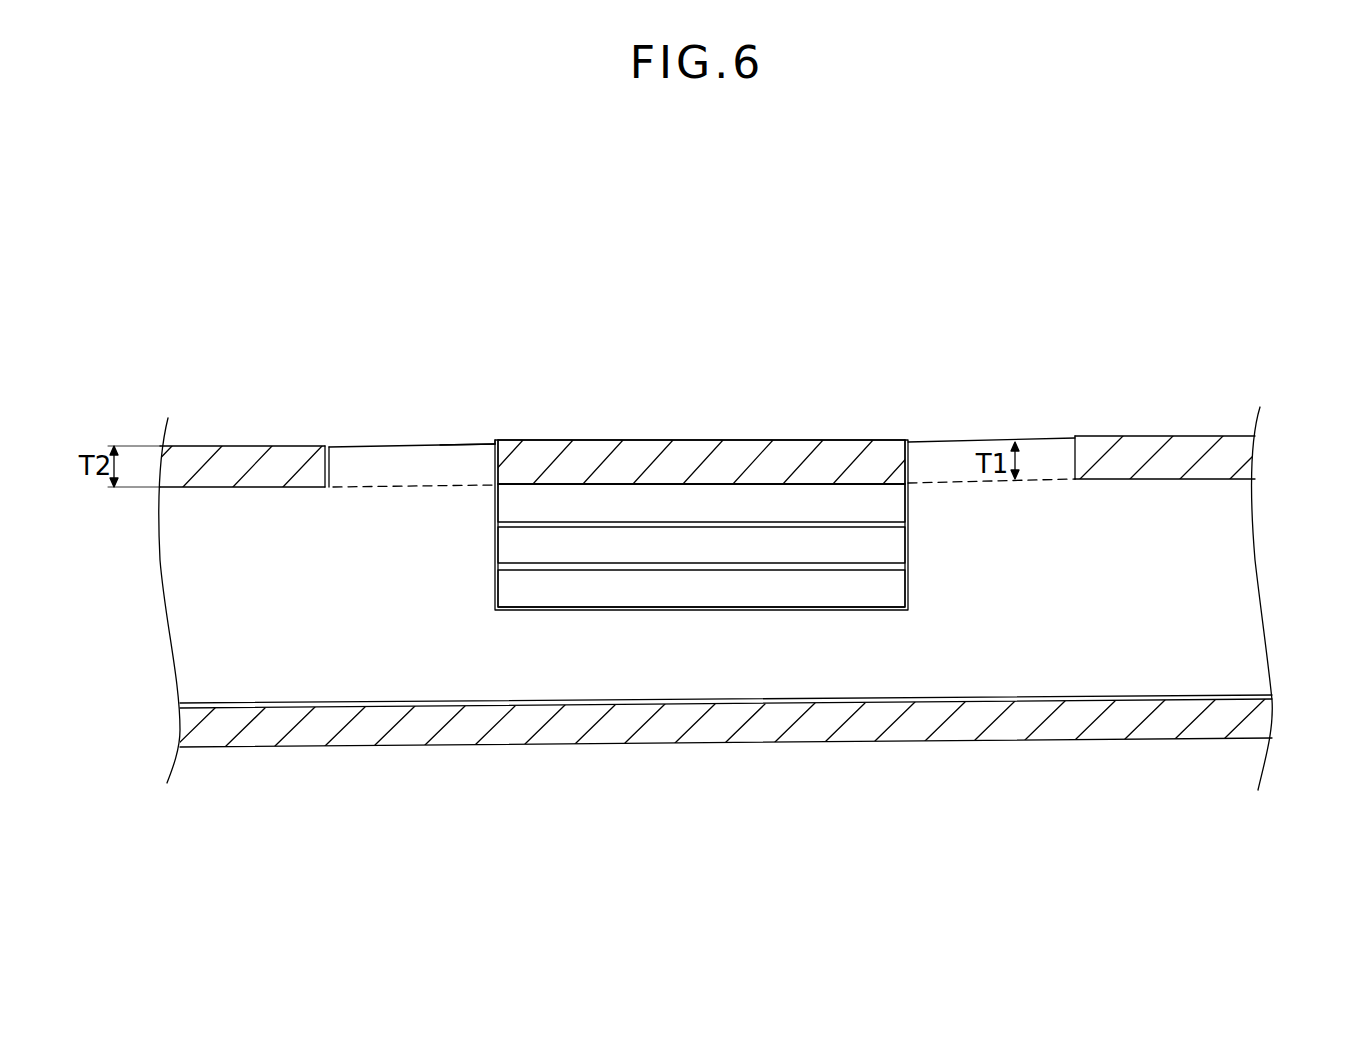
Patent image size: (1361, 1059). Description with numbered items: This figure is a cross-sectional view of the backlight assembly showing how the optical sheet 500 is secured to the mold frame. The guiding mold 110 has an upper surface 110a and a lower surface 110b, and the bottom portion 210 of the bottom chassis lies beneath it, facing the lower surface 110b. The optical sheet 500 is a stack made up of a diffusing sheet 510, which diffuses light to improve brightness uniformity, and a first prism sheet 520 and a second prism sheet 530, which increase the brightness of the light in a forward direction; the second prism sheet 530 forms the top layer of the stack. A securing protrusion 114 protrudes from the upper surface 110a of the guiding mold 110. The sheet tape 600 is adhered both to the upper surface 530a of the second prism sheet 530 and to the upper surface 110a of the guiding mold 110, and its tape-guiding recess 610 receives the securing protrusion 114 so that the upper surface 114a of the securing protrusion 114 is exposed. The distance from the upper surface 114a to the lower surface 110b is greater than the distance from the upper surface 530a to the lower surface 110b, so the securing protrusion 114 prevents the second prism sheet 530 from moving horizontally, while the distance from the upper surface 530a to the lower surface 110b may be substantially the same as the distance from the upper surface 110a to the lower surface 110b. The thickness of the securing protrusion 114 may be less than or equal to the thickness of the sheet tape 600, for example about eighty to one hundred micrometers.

The guiding mold 110 is at (1232, 573).
The upper surface of the guiding mold 110a is at (201, 490).
The lower surface of the guiding mold 110b is at (201, 703).
The securing protrusion 114 is at (389, 466).
The upper surface of the securing protrusion 114a is at (458, 444).
The bottom portion 210 is at (969, 718).
The optical sheet 500 is at (703, 612).
The diffusing sheet 510 is at (619, 591).
The first prism sheet 520 is at (710, 546).
The second prism sheet 530 is at (800, 505).
The upper surface of the second prism sheet 530a is at (551, 486).
The sheet tape 600 is at (705, 460).
The tape-guiding recess 610 is at (328, 462).